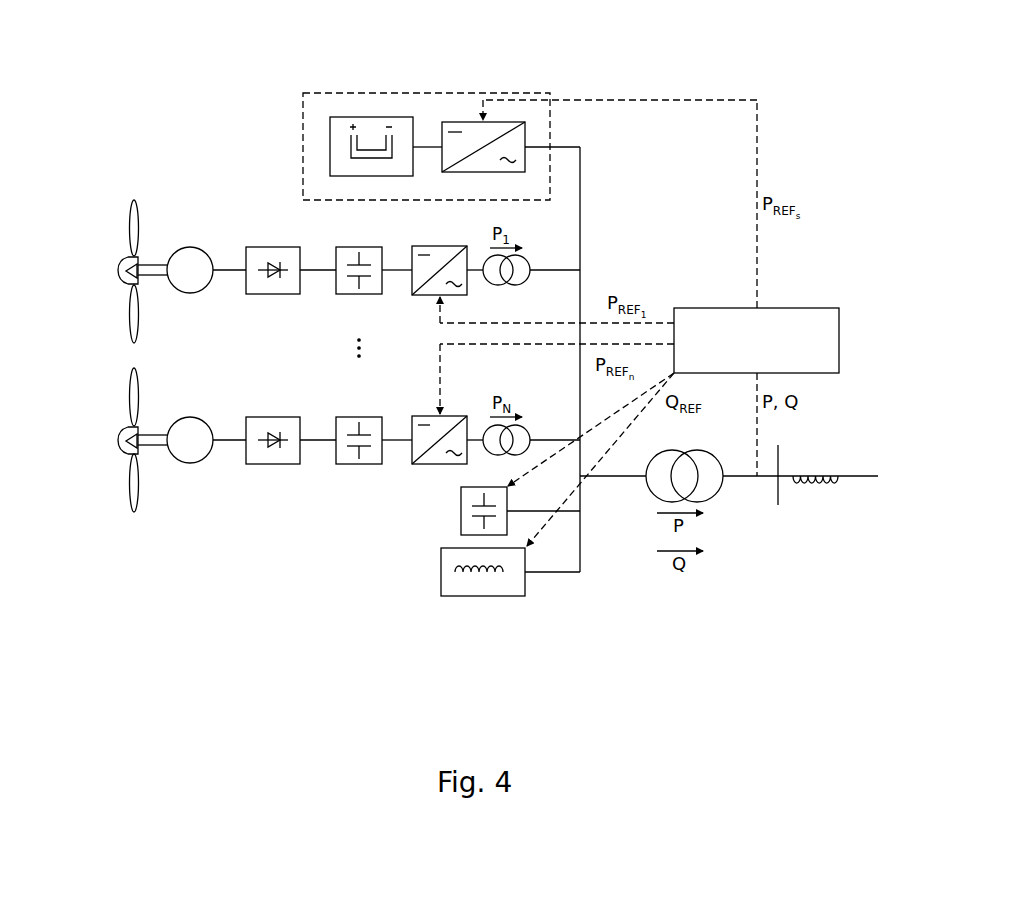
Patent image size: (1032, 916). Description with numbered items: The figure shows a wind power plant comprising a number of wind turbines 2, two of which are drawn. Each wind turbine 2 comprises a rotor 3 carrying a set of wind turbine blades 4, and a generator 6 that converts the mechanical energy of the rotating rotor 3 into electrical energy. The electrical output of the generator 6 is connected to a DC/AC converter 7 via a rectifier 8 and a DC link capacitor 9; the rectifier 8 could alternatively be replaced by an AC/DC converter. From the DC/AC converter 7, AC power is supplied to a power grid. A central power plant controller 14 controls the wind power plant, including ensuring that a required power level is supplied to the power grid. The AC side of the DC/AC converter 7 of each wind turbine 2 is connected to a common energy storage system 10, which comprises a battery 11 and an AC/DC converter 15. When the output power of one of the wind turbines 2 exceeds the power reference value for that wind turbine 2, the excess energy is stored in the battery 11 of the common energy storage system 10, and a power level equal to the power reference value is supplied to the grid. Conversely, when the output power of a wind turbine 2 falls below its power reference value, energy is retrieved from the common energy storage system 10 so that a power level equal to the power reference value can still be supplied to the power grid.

The wind turbine 2 is at (113, 375).
The rotor 3 is at (127, 277).
The wind turbine blades 4 is at (137, 215).
The generator 6 is at (193, 260).
The DC/AC converter 7 is at (457, 293).
The rectifier 8 is at (269, 286).
The DC link capacitor 9 is at (347, 287).
The common energy storage system 10 is at (303, 145).
The battery 11 is at (338, 130).
The central power plant controller 14 is at (800, 317).
The AC/DC converter 15 is at (470, 130).